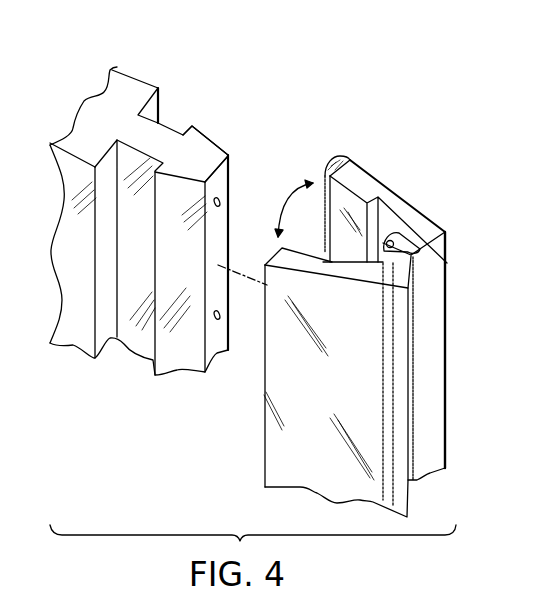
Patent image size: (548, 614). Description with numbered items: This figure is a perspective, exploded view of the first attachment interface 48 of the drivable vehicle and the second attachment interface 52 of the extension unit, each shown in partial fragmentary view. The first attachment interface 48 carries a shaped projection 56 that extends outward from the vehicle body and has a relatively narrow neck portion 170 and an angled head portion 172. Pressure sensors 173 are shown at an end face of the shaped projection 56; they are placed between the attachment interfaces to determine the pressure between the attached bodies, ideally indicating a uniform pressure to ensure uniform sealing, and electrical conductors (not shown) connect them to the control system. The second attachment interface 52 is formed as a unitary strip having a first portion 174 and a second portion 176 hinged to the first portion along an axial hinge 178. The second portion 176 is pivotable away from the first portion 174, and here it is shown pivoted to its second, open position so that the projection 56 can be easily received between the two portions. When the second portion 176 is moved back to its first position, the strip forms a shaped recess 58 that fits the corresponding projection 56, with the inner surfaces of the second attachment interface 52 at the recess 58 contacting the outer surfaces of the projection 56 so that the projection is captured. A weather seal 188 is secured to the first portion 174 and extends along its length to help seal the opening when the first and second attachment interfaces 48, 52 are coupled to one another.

The first attachment interface 48 is at (141, 80).
The neck portion 170 is at (168, 128).
The shaped projection 56 is at (196, 128).
The angled head portion 172 is at (210, 142).
The pressure sensor 173 is at (233, 202).
The second portion 176 is at (298, 260).
The second attachment interface 52 is at (372, 173).
The weather seal 188 is at (328, 158).
The first portion 174 is at (432, 219).
The shaped recess 58 is at (378, 234).
The axial hinge 178 is at (394, 245).